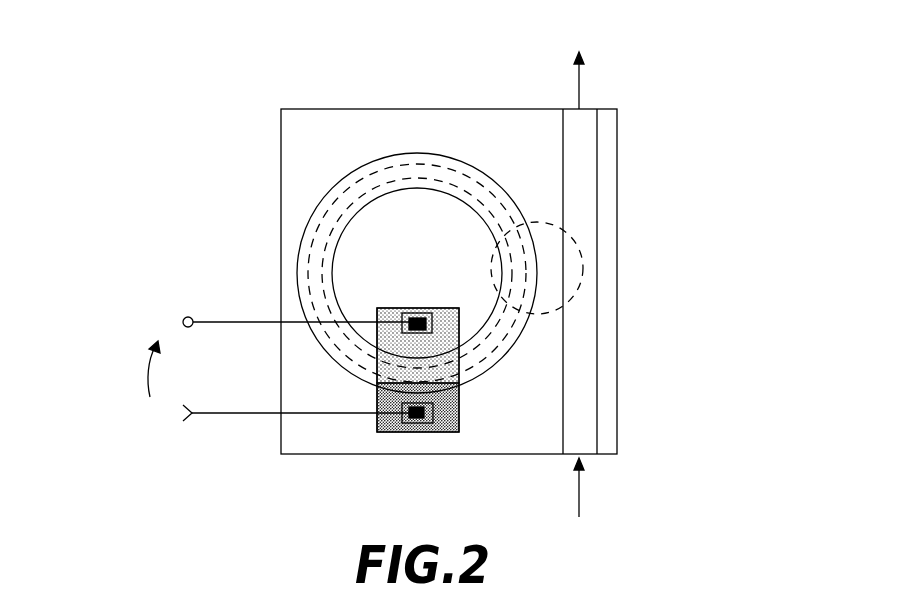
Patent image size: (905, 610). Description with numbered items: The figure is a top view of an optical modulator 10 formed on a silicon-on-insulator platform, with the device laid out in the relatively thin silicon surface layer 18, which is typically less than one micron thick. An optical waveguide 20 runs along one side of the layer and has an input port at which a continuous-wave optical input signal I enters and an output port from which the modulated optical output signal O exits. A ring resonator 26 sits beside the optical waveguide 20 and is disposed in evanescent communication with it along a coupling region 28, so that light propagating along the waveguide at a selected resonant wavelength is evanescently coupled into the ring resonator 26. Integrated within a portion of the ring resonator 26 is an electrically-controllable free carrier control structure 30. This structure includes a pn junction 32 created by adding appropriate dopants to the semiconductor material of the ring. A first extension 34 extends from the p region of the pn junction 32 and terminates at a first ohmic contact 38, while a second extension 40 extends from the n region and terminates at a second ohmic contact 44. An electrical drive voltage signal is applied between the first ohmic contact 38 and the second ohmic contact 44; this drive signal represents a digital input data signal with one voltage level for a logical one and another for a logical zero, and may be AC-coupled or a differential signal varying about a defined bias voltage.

The optical modulator 10 is at (167, 216).
The silicon surface layer 18 is at (297, 164).
The optical waveguide 20 is at (585, 143).
The ring resonator 26 is at (462, 165).
The coupling region 28 is at (578, 242).
The free carrier control structure 30 is at (477, 427).
The pn junction 32 is at (365, 390).
The first extension 34 is at (388, 315).
The first ohmic contact 38 is at (425, 318).
The second extension 40 is at (450, 405).
The second ohmic contact 44 is at (416, 416).